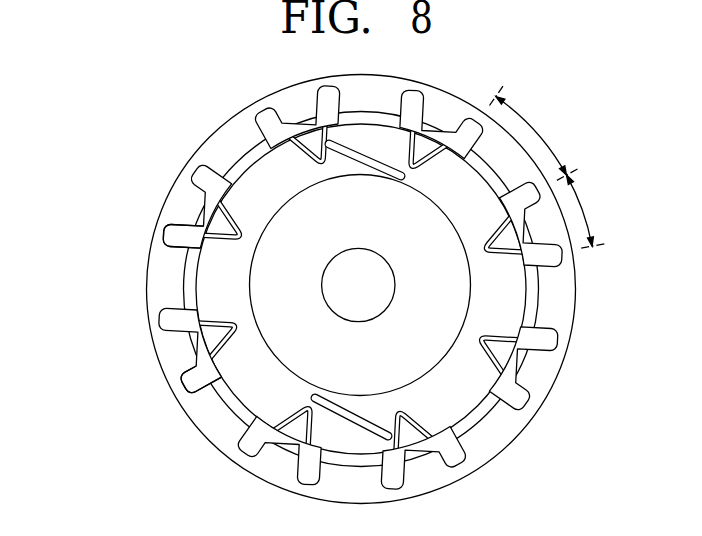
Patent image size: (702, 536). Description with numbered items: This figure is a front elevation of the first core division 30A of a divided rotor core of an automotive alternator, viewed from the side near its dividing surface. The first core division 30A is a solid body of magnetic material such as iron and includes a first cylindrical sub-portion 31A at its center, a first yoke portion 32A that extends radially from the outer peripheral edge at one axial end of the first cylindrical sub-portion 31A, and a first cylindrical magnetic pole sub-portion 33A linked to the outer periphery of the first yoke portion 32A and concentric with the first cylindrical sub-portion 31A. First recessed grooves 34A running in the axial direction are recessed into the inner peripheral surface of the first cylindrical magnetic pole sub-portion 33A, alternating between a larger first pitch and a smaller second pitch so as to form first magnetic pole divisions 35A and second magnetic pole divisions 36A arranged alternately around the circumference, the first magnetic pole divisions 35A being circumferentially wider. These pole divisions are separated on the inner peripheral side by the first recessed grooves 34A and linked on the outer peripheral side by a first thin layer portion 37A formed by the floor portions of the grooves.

The first core division 30A is at (152, 86).
The first cylindrical sub-portion 31A is at (188, 340).
The first yoke portion 32A is at (210, 405).
The first cylindrical magnetic pole sub-portion 33A is at (177, 364).
The first recessed grooves 34A is at (283, 303).
The first magnetic pole divisions 35A is at (168, 270).
The second magnetic pole divisions 36A is at (190, 205).
The first thin layer portion 37A is at (192, 233).